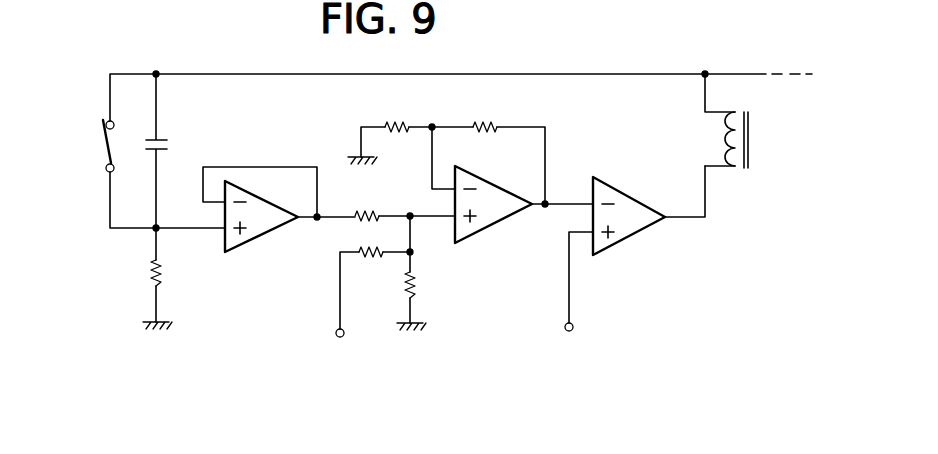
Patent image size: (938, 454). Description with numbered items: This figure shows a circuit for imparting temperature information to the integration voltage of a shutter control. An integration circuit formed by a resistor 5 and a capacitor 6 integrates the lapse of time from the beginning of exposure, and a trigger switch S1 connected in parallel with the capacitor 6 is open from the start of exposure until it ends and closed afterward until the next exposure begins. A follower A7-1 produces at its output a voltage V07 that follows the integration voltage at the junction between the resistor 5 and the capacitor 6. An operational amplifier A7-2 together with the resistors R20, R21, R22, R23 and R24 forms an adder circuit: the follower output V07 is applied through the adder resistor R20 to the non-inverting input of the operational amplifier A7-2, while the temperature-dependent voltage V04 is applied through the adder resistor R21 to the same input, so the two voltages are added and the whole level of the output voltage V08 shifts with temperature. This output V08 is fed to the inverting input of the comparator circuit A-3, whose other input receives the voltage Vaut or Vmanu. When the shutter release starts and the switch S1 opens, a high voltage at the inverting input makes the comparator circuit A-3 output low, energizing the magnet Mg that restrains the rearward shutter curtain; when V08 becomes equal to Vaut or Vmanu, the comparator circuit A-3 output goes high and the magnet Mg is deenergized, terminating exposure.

The trigger switch S1 is at (102, 146).
The capacitor 6 is at (170, 145).
The resistor 5 is at (146, 277).
The follower A7-1 is at (234, 253).
The output voltage of the follower V07 is at (317, 219).
The adder resistor R20 is at (374, 212).
The resistor R23 is at (404, 122).
The resistor R24 is at (492, 122).
The operational amplifier A7-2 is at (482, 243).
The output voltage of the operational amplifier V08 is at (545, 207).
The adder resistor R21 is at (370, 258).
The resistor R22 is at (415, 283).
The output voltage of operational amplifier V04 is at (342, 351).
The comparator circuit A-3 is at (638, 196).
The automatic-mode voltage Vaut is at (567, 296).
The manual-mode voltage Vmanu is at (580, 373).
The magnet Mg is at (752, 135).